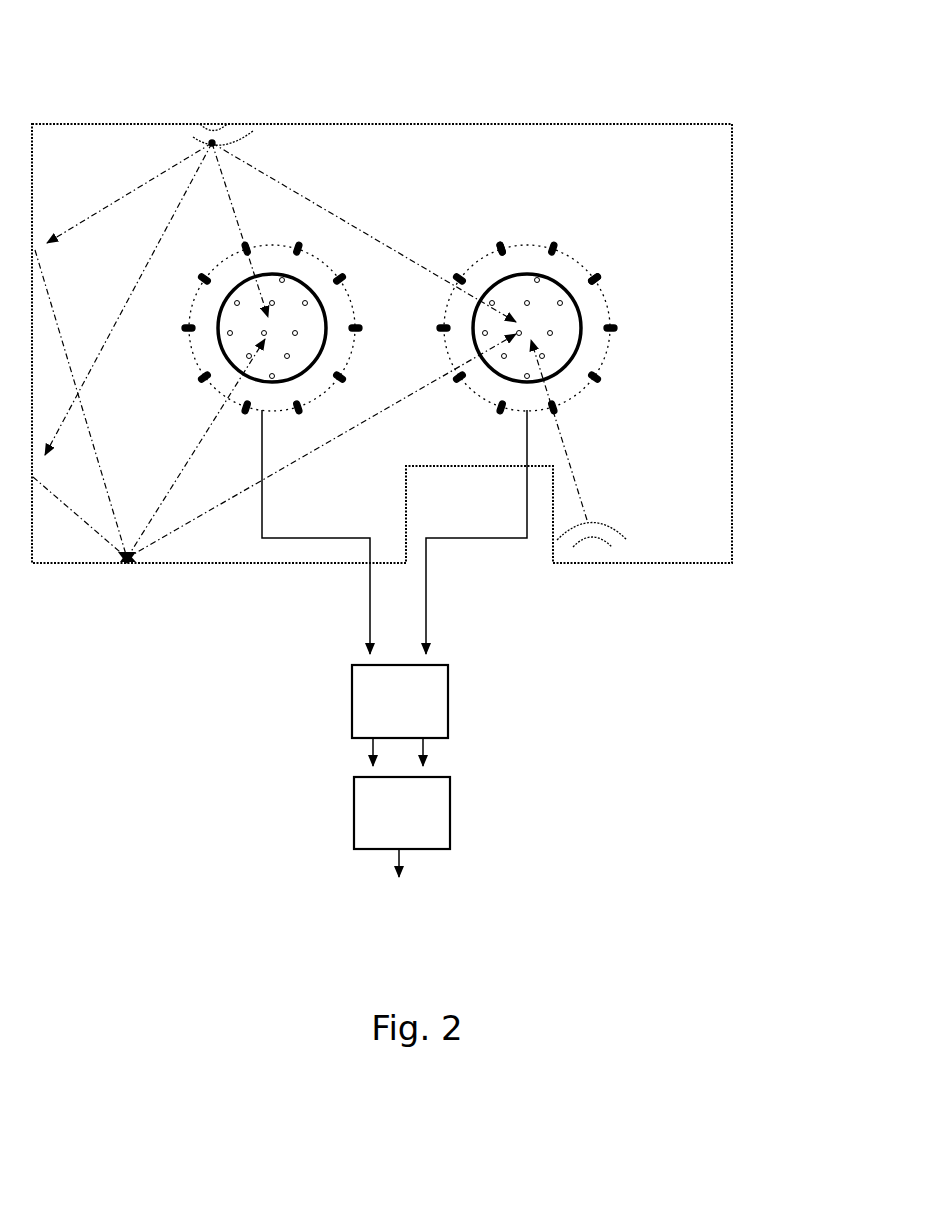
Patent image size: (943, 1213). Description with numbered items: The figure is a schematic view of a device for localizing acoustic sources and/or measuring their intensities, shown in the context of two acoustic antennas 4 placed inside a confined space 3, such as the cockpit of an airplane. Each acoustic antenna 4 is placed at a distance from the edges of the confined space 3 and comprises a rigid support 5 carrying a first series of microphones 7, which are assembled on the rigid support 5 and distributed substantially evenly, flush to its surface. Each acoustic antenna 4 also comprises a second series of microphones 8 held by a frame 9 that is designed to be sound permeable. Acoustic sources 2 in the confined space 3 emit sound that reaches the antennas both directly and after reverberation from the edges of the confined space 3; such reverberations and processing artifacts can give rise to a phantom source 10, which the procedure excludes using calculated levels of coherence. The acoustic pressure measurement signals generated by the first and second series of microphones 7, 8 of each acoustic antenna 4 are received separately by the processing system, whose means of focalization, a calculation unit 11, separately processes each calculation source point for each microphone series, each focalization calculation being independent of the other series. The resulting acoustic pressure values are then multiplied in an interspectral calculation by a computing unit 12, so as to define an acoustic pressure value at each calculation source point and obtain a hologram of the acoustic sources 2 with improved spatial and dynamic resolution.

The acoustic source 2 is at (220, 126).
The confined space 3 is at (692, 206).
The acoustic antenna 4 is at (322, 260).
The rigid support 5 is at (585, 357).
The first series of microphones 7 is at (527, 303).
The second series of microphones 8 is at (550, 233).
The frame 9 is at (572, 258).
The phantom source 10 is at (127, 560).
The calculation unit 11 is at (400, 701).
The computing unit 12 is at (402, 813).